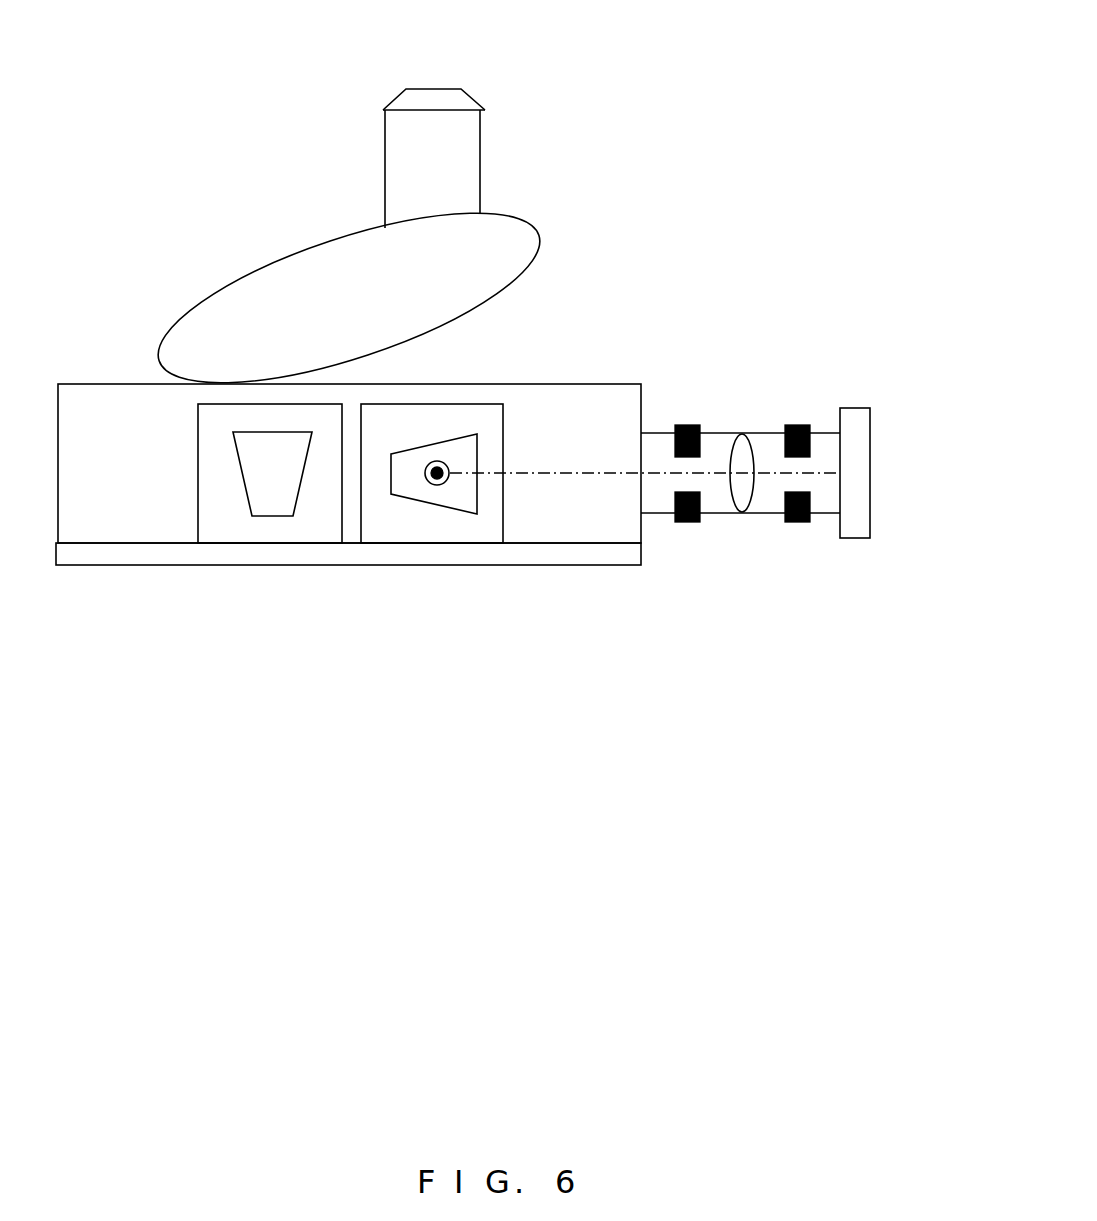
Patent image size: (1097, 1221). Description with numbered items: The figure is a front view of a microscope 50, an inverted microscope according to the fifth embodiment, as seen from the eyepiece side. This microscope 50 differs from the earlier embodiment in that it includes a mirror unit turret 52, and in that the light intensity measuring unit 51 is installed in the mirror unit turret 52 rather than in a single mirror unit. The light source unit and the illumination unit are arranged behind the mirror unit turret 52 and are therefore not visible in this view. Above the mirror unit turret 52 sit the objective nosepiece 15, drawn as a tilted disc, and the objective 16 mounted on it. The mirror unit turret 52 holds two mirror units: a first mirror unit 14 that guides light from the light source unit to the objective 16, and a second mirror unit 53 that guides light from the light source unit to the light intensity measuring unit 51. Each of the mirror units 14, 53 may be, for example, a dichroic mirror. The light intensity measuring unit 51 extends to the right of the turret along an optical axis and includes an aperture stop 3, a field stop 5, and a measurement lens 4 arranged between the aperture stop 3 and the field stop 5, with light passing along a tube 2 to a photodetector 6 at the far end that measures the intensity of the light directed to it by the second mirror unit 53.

The microscope 50 is at (864, 43).
The light intensity measuring unit 51 is at (849, 352).
The mirror unit turret 52 is at (225, 565).
The mirror unit 53 is at (477, 400).
The mirror unit 14 is at (198, 477).
The objective nosepiece 15 is at (543, 236).
The objective 16 is at (480, 158).
The tube 2 is at (715, 433).
The aperture stop 3 is at (687, 522).
The measurement lens 4 is at (742, 512).
The field stop 5 is at (793, 522).
The photodetector 6 is at (863, 483).